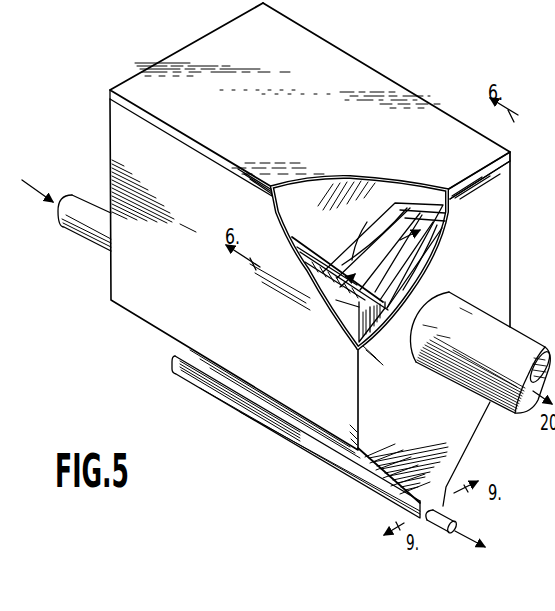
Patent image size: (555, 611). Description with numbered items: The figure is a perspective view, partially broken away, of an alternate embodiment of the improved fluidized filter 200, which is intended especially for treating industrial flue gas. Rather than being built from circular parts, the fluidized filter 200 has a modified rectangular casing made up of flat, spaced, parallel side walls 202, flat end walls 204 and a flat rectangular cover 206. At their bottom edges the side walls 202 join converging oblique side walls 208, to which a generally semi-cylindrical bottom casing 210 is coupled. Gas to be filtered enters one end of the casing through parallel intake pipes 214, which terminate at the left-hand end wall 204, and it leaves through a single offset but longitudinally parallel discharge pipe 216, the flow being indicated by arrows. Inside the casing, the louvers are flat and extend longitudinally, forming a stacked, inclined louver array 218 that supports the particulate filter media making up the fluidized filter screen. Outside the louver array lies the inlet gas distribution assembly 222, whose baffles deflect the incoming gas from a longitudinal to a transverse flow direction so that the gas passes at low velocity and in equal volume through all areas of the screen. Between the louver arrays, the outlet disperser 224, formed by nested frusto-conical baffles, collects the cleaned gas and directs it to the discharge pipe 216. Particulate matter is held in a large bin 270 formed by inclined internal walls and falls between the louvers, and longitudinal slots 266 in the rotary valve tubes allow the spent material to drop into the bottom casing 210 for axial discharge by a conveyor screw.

The fluidized filter 200 is at (367, 62).
The side walls 202 is at (180, 317).
The end walls 204 is at (512, 252).
The cover 206 is at (494, 156).
The converging oblique side walls 208 is at (303, 424).
The semi-cylindrical bottom casing 210 is at (336, 470).
The intake pipes 214 is at (80, 198).
The discharge pipe 216 is at (487, 317).
The louver array 218 is at (331, 300).
The inlet gas distribution assembly 222 is at (342, 308).
The outlet disperser 224 is at (440, 234).
The longitudinal slots 266 is at (440, 534).
The bin 270 is at (347, 181).